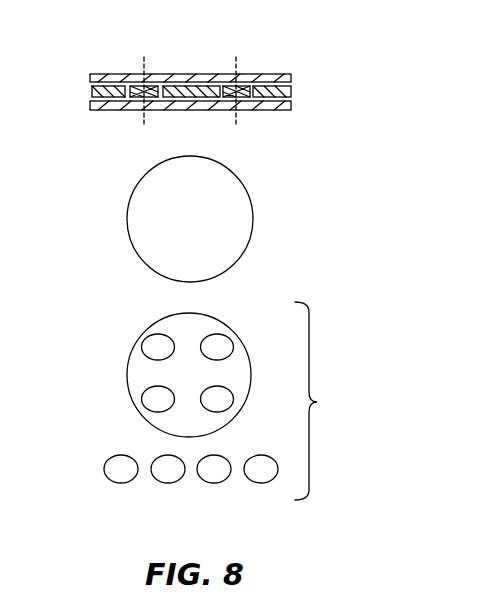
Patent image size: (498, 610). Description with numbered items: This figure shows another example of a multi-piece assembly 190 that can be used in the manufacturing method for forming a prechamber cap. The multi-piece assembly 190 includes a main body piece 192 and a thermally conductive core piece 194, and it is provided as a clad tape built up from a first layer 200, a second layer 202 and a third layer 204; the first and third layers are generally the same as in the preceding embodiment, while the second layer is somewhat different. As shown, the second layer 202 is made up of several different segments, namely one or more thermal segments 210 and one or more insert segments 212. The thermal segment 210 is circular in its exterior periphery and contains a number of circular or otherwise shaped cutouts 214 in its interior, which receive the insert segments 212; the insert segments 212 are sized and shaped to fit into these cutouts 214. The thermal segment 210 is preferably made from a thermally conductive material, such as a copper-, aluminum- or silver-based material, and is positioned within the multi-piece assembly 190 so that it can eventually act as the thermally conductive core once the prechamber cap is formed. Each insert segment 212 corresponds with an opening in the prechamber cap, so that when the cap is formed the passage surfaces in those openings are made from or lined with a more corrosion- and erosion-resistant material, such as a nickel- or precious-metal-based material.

The multi-piece assembly 190 is at (317, 48).
The main body piece 192 is at (131, 113).
The thermally conductive core piece 194 is at (297, 91).
The first layer 200 is at (112, 75).
The second layer 202 is at (321, 401).
The third layer 204 is at (274, 106).
The thermal segment 210 is at (98, 90).
The insert segment 212 is at (138, 86).
The cutout 214 is at (146, 393).